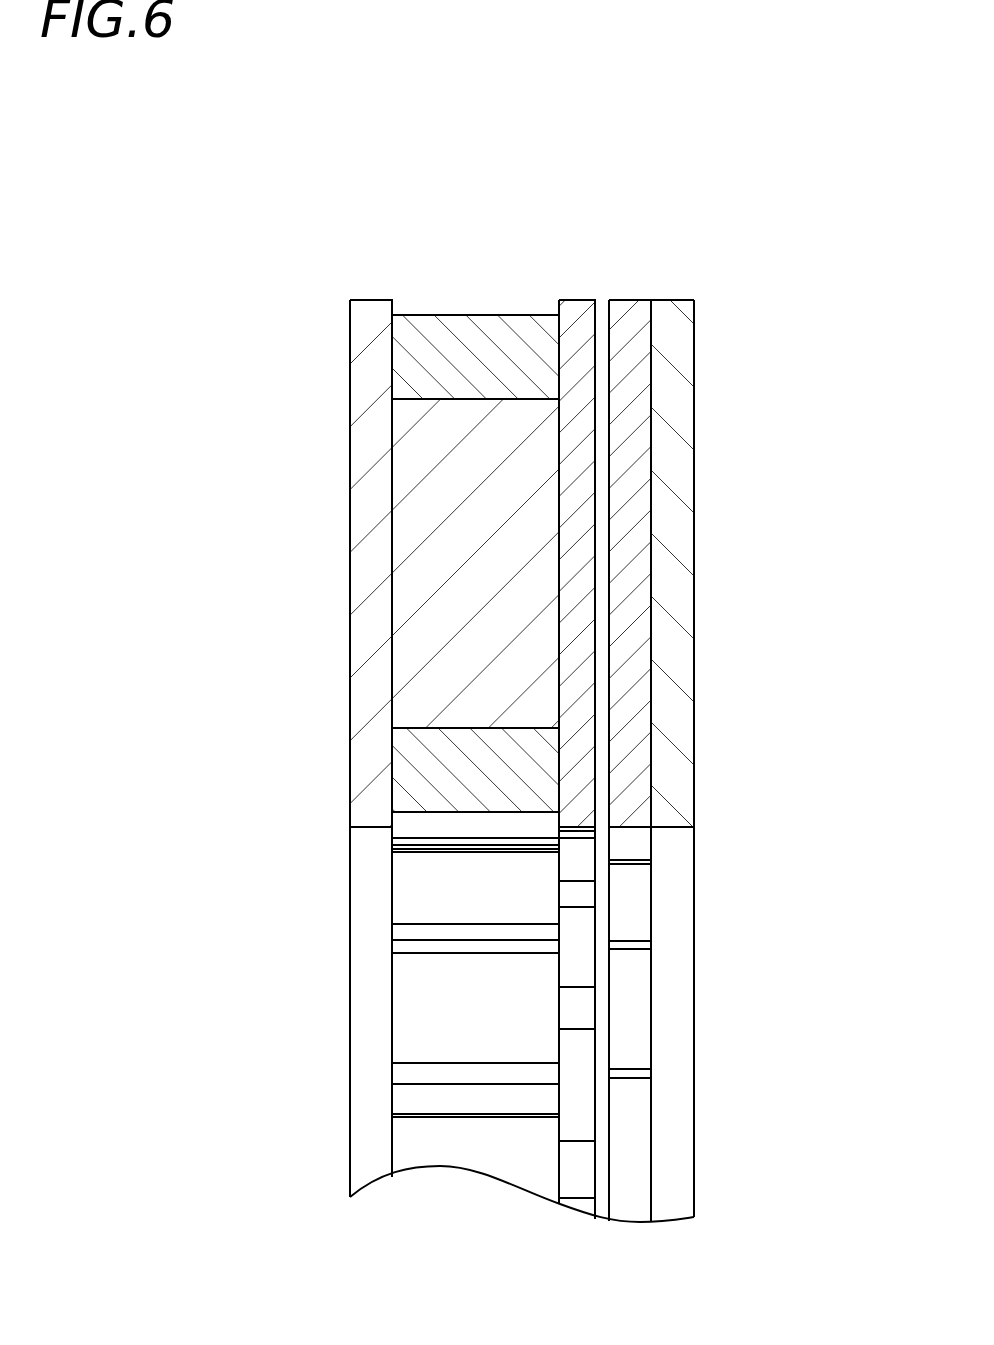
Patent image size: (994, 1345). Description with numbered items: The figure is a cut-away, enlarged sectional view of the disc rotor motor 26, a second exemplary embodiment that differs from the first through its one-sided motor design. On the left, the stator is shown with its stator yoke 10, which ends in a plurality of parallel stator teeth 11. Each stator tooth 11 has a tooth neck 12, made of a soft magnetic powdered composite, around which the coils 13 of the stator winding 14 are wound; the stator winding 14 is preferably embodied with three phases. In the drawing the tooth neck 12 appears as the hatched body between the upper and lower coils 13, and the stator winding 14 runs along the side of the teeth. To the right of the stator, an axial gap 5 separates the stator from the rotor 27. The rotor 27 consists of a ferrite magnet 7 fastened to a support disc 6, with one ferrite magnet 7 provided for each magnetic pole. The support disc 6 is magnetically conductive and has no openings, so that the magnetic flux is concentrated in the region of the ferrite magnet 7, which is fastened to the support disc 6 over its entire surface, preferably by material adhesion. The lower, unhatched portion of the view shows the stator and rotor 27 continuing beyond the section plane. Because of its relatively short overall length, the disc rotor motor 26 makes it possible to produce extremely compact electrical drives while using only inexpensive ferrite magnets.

The axial gap 5 is at (602, 298).
The support disc 6 is at (672, 552).
The ferrite magnet 7 is at (623, 365).
The stator yoke 10 is at (368, 962).
The stator tooth 11 is at (562, 682).
The tooth neck 12 is at (480, 607).
The coil 13 is at (475, 352).
The stator winding 14 is at (422, 310).
The disc rotor motor 26 is at (757, 182).
The rotor 27 is at (680, 1007).